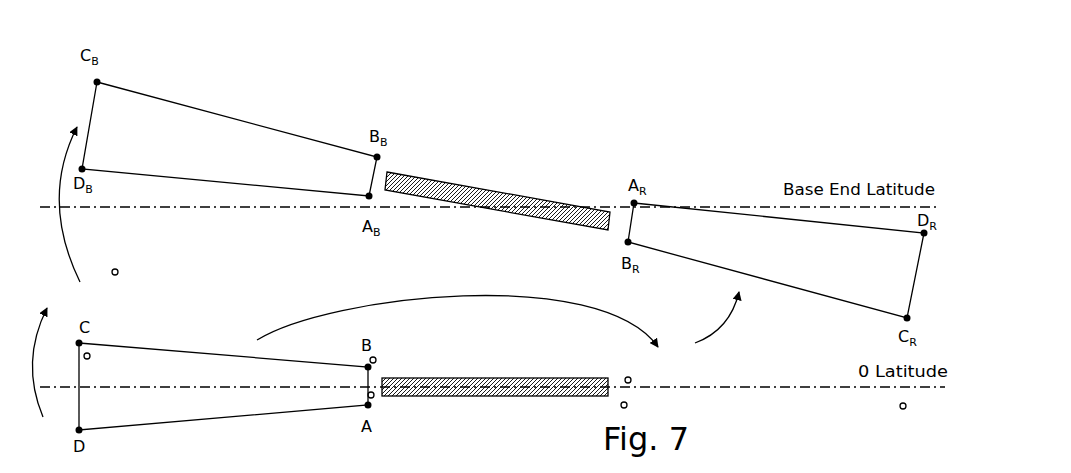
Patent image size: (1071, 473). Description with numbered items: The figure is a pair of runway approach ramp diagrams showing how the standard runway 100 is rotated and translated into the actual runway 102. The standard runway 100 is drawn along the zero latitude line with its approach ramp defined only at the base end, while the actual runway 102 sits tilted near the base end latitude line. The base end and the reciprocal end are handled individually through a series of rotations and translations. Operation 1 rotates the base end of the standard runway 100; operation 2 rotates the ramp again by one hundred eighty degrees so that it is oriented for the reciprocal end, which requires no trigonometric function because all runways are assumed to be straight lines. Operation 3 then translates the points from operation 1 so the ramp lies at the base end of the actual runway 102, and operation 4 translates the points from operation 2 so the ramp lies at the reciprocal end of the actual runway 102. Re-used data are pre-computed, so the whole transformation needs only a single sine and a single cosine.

The standard runway 100 is at (541, 378).
The actual runway 102 is at (500, 193).
The operation 1 is at (46, 362).
The operation 2 is at (457, 307).
The operation 3 is at (61, 204).
The operation 4 is at (721, 317).